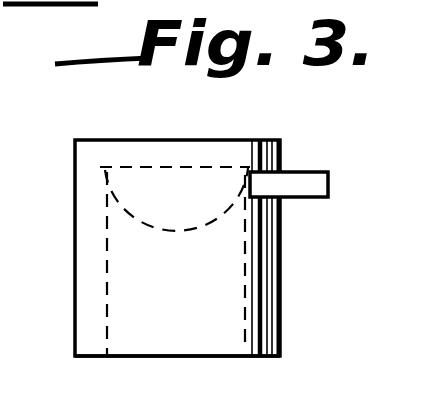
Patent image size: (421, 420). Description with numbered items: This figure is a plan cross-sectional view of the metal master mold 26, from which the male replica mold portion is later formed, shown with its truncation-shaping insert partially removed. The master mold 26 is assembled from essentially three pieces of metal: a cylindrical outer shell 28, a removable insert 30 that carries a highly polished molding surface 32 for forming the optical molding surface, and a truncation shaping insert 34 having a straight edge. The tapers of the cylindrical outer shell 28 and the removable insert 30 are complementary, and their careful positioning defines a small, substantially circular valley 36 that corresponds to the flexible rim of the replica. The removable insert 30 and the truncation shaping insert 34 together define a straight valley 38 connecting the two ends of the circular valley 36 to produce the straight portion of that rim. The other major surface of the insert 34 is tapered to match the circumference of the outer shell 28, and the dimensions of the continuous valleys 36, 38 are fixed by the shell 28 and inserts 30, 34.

The metal master mold 26 is at (317, 310).
The cylindrical outer shell 28 is at (103, 348).
The removable insert 30 is at (216, 346).
The polished molding surface 32 is at (199, 166).
The truncation shaping insert 34 is at (323, 193).
The circular valley 36 is at (101, 164).
The straight valley 38 is at (255, 165).